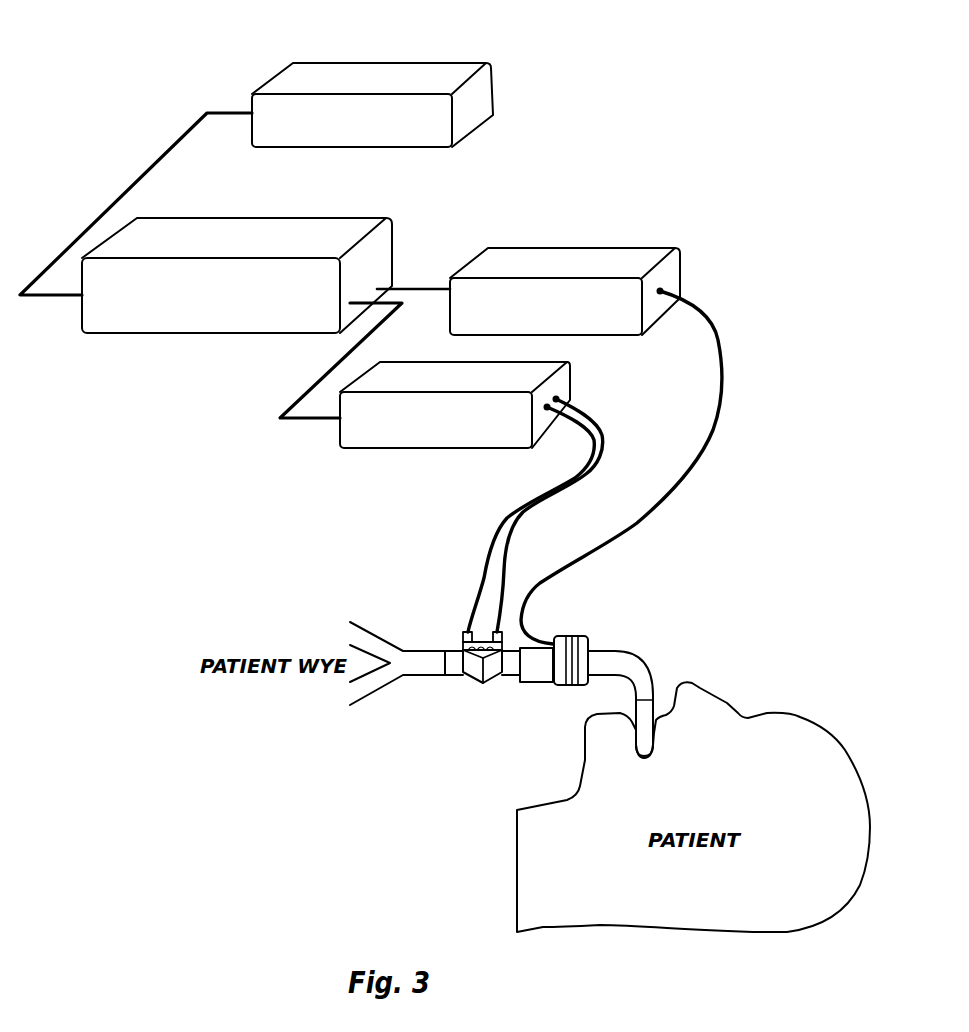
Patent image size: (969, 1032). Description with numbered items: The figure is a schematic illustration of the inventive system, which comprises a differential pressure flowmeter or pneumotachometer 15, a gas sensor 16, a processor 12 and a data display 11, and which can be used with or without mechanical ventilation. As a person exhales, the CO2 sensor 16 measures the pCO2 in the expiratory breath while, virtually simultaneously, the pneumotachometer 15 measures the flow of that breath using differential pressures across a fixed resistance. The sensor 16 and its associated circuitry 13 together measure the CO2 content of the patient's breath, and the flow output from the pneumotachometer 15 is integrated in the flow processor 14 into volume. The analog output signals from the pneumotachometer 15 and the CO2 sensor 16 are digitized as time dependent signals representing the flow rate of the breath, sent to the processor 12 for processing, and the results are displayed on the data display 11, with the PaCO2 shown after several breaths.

The data display 11 is at (373, 73).
The processor 12 is at (262, 240).
The associated circuitry 13 is at (580, 260).
The processor 14 is at (378, 435).
The pneumotachometer 15 is at (472, 680).
The gas sensor 16 is at (590, 652).